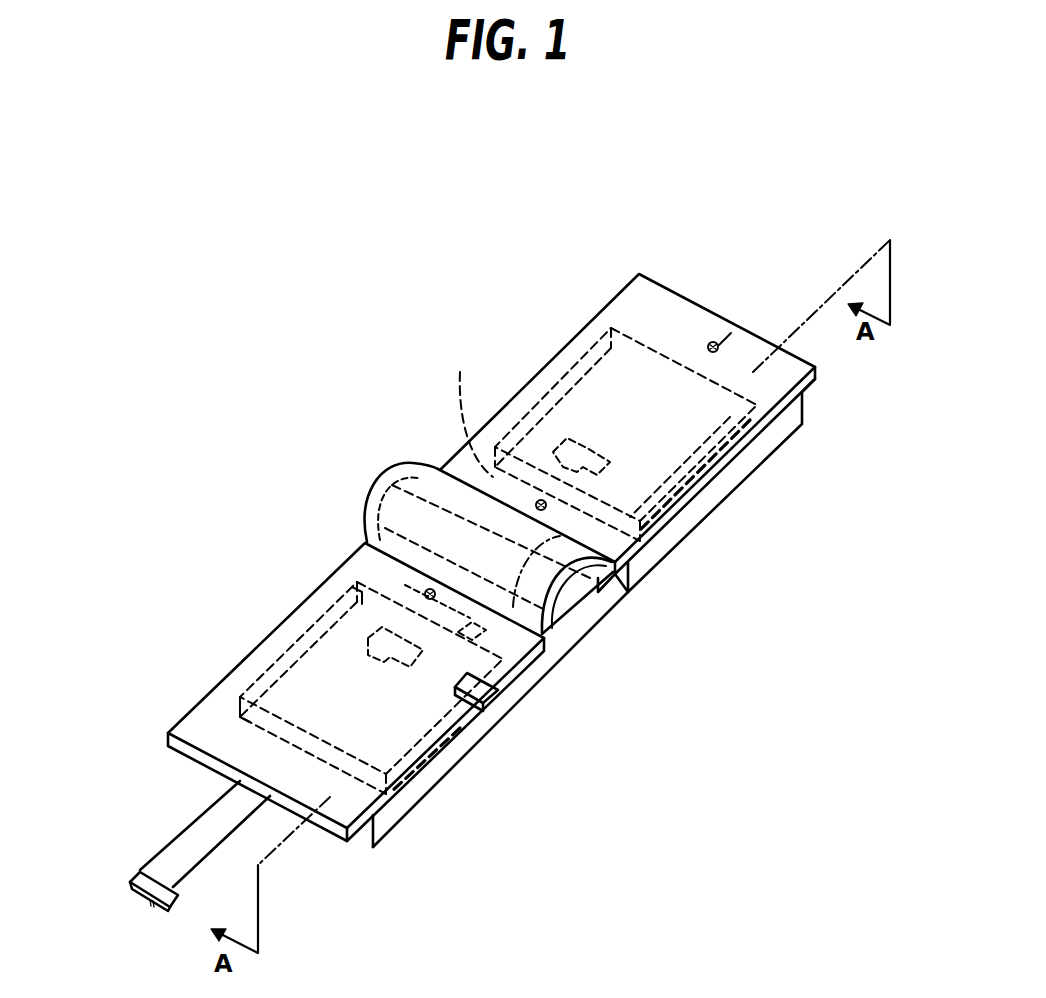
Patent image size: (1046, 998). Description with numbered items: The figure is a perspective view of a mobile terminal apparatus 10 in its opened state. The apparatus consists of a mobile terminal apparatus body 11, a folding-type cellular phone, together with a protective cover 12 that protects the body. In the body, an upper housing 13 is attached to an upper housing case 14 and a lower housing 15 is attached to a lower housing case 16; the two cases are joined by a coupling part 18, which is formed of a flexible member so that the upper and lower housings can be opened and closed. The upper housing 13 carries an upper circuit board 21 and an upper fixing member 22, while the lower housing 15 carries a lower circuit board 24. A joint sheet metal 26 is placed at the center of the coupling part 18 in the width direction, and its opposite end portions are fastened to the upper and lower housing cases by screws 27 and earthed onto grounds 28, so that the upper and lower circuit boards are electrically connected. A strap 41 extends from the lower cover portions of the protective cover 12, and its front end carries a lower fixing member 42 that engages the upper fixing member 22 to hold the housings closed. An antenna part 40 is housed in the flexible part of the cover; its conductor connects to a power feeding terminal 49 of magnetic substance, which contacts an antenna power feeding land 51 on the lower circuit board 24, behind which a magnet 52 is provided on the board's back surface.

The mobile terminal apparatus 10 is at (711, 241).
The mobile terminal apparatus body 11 is at (801, 407).
The protective cover 12 is at (650, 321).
The upper housing 13 is at (780, 432).
The upper housing case 14 is at (710, 492).
The lower housing 15 is at (482, 727).
The lower housing case 16 is at (438, 778).
The coupling part 18 is at (604, 586).
The upper circuit board 21 is at (690, 325).
The upper fixing member 22 is at (731, 333).
The lower circuit board 24 is at (317, 675).
The joint sheet metal 26 is at (465, 411).
The screws 27 is at (539, 499).
The grounds 28 is at (583, 447).
The antenna part 40 is at (432, 505).
The strap 41 is at (190, 830).
The lower fixing member 42 is at (147, 886).
The power feeding terminal 49 is at (468, 640).
The antenna power feeding land 51 is at (375, 598).
The magnet 52 is at (500, 695).